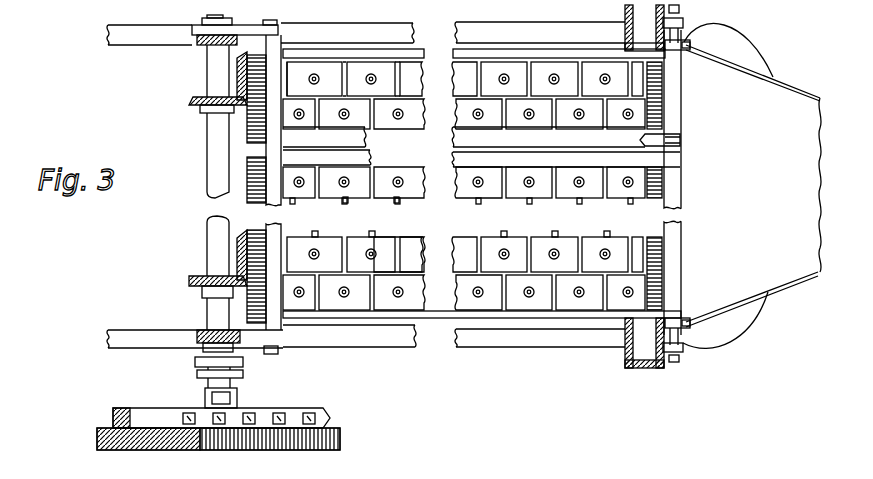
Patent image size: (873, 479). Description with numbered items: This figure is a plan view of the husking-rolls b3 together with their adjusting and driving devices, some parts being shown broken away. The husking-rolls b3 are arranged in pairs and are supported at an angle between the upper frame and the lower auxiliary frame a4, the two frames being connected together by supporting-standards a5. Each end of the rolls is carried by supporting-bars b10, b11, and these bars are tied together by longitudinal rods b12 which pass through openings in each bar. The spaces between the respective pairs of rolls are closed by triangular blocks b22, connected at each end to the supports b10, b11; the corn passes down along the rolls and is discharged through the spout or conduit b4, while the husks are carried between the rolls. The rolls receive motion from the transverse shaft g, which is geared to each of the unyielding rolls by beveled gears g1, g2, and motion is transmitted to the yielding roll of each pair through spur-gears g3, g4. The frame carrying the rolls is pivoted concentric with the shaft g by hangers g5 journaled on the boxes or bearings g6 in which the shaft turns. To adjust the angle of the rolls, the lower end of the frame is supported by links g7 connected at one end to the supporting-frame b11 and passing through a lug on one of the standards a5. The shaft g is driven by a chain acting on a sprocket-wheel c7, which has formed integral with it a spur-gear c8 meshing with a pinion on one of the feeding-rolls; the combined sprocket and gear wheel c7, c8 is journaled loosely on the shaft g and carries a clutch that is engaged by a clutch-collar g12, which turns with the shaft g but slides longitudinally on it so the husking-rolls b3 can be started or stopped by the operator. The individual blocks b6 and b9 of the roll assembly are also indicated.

The transverse shaft g is at (210, 162).
The beveled gear g1 is at (200, 101).
The beveled gear g2 is at (240, 72).
The spur-gear g3 is at (258, 72).
The spur-gear g4 is at (247, 120).
The hanger g5 is at (256, 30).
The box or bearing g6 is at (195, 42).
The link g7 is at (682, 46).
The clutch-collar g12 is at (198, 373).
The lower auxiliary frame a4 is at (366, 189).
The supporting-standard a5 is at (625, 16).
The husking-rolls b3 is at (427, 163).
The spout or conduit b4 is at (783, 185).
The matrix block b6 is at (373, 253).
The matrix block b9 is at (507, 202).
The supporting-bar b10 is at (288, 328).
The supporting-bar b11 is at (681, 244).
The longitudinal rod b12 is at (406, 58).
The triangular block b22 is at (481, 146).
The sprocket-wheel c7 is at (136, 420).
The spur-gear c8 is at (240, 450).